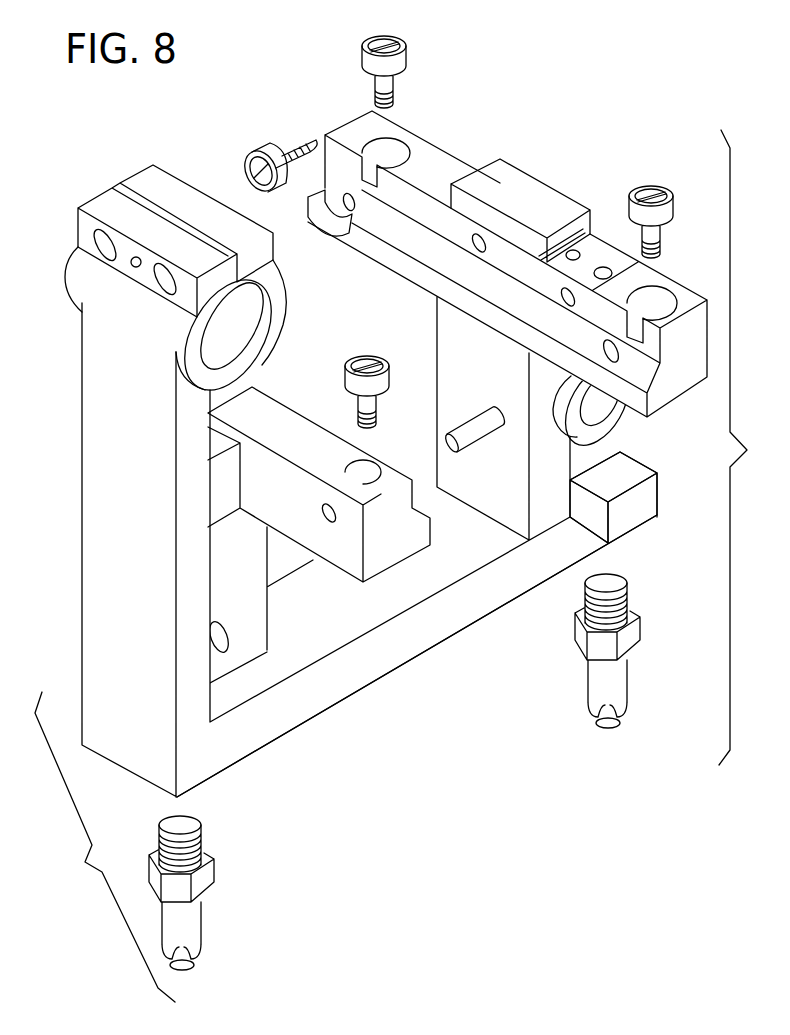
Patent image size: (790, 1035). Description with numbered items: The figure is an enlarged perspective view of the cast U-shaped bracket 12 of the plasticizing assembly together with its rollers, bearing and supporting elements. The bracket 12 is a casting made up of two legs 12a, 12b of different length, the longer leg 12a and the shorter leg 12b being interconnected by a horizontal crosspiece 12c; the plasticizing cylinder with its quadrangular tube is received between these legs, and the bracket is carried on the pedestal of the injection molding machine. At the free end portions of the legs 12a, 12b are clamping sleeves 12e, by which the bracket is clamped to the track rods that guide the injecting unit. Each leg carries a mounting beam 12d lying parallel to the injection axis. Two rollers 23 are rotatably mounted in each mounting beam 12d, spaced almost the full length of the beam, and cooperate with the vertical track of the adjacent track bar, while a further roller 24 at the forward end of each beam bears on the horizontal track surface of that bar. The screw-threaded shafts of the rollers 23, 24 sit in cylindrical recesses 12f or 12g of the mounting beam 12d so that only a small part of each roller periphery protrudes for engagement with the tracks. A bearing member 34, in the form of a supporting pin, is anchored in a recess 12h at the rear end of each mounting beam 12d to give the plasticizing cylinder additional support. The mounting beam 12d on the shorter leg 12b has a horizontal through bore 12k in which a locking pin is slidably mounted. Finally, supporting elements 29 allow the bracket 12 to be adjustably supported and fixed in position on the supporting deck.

The U-shaped bracket 12 is at (333, 703).
The leg 12a is at (98, 565).
The leg 12b is at (557, 498).
The horizontal crosspiece 12c is at (420, 642).
The mounting beam 12d is at (287, 430).
The clamping sleeve 12e is at (617, 407).
The cylindrical recess 12f is at (363, 480).
The cylindrical recess 12g is at (348, 210).
The recess 12h is at (329, 513).
The horizontal through bore 12k is at (488, 235).
The roller 23 is at (375, 358).
The roller 24 is at (270, 152).
The supporting element 29 is at (183, 924).
The bearing member 34 is at (477, 435).